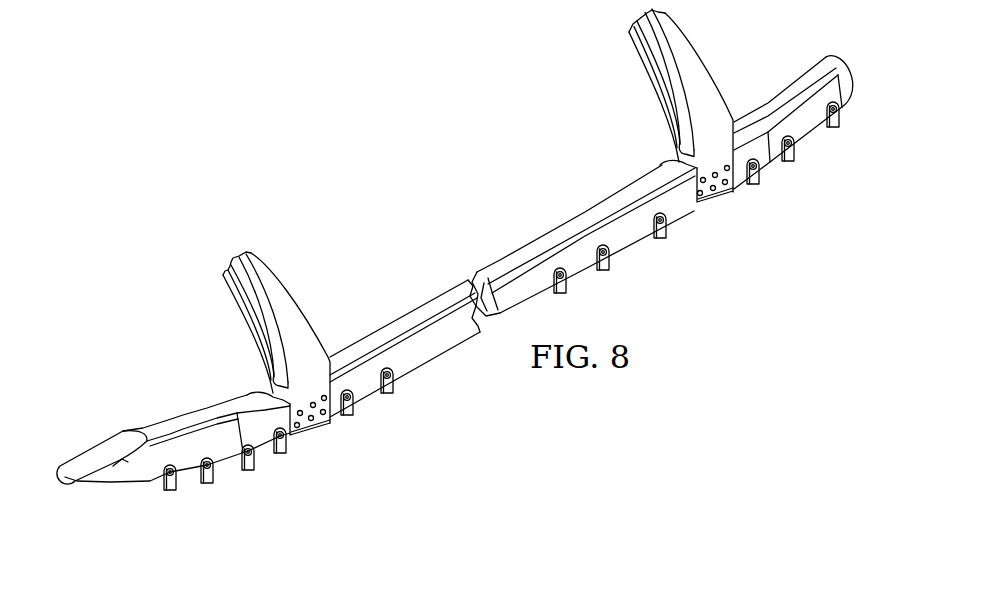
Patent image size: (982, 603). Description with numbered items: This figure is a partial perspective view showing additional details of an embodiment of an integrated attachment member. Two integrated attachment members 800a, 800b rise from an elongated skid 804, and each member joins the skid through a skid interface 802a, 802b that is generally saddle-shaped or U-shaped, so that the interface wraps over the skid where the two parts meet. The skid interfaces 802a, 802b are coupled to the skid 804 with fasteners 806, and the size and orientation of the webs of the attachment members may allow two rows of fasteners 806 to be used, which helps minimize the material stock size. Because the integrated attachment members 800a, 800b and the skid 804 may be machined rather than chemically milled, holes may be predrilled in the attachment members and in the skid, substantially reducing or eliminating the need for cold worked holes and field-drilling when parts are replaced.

The integrated attachment member 800a is at (298, 299).
The integrated attachment member 800b is at (700, 60).
The skid interface 802a is at (259, 393).
The skid interface 802b is at (663, 163).
The skid 804 is at (507, 254).
The fasteners 806 is at (321, 436).